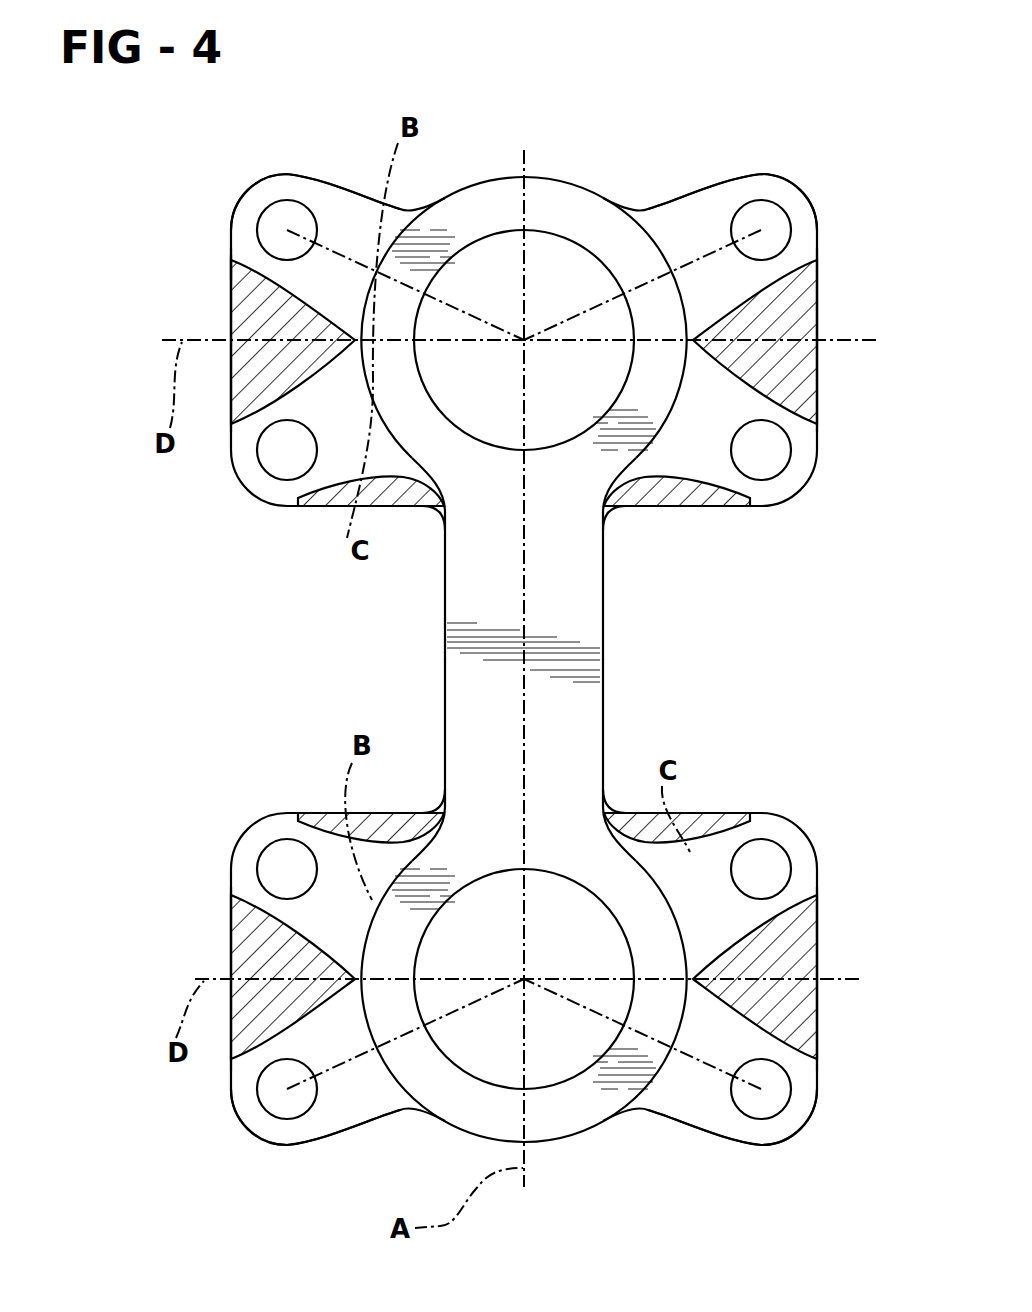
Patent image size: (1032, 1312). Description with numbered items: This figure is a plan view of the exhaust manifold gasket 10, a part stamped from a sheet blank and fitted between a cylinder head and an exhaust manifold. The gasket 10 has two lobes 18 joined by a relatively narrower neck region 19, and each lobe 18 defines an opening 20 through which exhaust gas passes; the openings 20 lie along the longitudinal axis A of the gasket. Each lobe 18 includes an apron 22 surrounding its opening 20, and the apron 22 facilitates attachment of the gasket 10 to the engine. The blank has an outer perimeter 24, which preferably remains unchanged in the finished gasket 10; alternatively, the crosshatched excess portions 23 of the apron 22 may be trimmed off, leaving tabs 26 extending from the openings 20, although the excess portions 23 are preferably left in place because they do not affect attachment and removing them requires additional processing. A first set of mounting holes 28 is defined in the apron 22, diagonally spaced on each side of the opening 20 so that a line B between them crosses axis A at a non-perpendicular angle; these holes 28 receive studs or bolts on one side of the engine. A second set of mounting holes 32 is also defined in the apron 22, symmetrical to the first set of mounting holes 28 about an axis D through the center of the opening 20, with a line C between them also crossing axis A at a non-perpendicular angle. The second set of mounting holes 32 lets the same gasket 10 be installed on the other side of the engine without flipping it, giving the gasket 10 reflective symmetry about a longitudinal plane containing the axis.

The exhaust manifold gasket 10 is at (702, 76).
The lobe 18 is at (218, 239).
The neck region 19 is at (432, 697).
The opening 20 is at (560, 236).
The apron 22 is at (800, 353).
The excess portions 23 is at (794, 967).
The outer perimeter 24 is at (220, 267).
The tab 26 is at (300, 186).
The first set of mounting holes 28 is at (273, 223).
The second set of mounting holes 32 is at (778, 214).